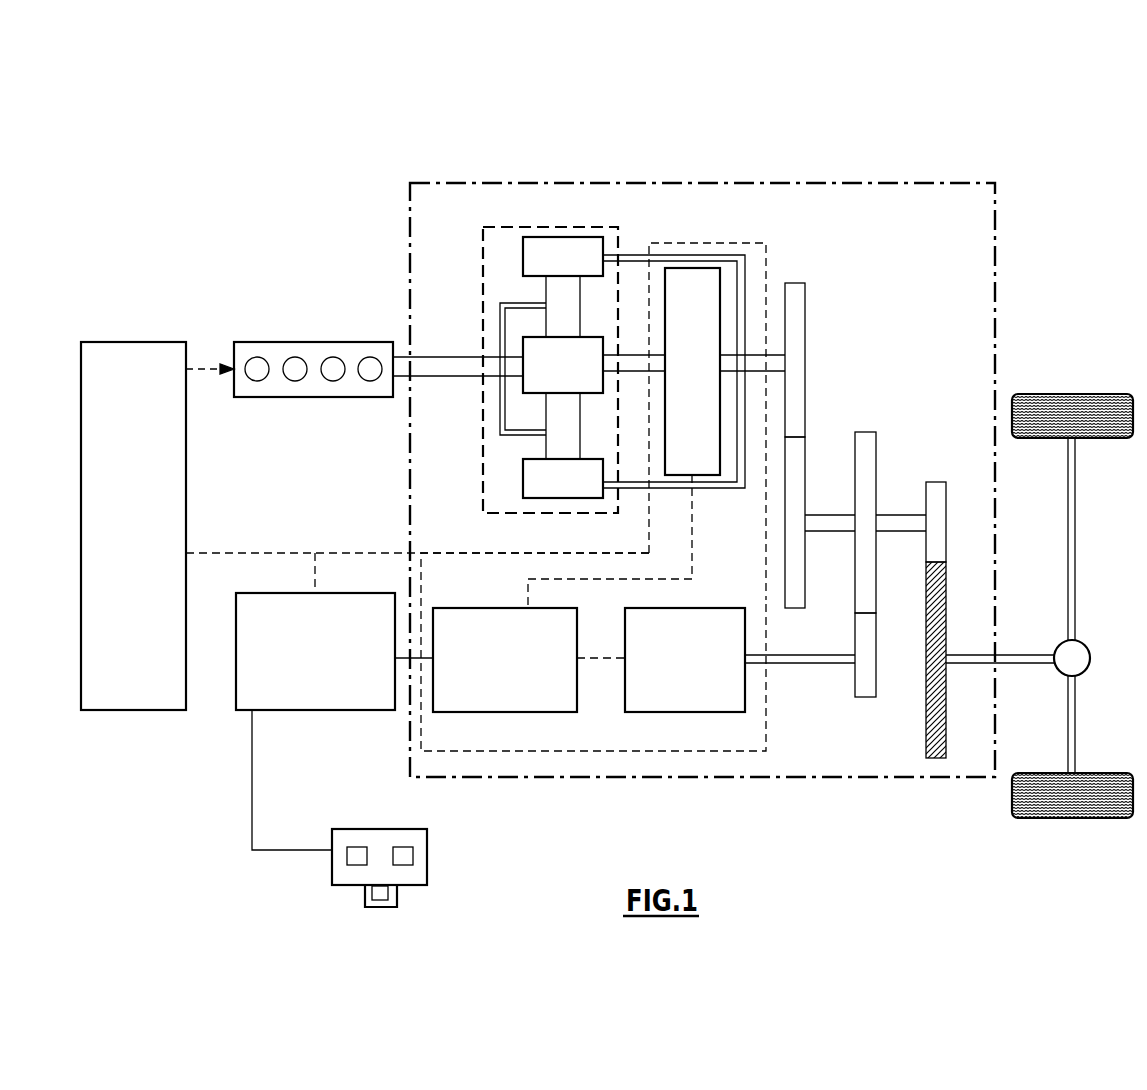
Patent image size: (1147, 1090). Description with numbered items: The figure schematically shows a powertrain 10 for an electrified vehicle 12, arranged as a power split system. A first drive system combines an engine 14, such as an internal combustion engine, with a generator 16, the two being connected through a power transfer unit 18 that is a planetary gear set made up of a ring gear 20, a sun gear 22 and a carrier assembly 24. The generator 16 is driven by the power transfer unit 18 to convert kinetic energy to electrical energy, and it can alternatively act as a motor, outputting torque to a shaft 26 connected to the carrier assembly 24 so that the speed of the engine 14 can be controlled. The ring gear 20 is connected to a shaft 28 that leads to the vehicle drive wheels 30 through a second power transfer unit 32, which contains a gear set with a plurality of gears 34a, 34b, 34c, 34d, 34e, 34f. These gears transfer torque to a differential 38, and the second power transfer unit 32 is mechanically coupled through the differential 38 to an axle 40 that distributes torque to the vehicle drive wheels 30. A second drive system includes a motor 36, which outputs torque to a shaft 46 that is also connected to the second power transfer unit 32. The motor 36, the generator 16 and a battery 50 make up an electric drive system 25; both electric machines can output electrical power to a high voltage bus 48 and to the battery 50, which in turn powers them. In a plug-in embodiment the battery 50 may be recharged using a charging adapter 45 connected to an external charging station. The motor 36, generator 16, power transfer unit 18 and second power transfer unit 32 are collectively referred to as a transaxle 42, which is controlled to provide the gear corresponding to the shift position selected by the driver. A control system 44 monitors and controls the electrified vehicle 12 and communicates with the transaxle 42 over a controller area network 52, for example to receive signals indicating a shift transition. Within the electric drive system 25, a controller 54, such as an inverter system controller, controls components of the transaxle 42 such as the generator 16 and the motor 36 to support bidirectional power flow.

The powertrain 10 is at (341, 248).
The electrified vehicle 12 is at (470, 139).
The engine 14 is at (275, 397).
The generator 16 is at (708, 268).
The power transfer unit 18 is at (483, 312).
The ring gear 20 is at (523, 258).
The sun gear 22 is at (523, 350).
The carrier assembly 24 is at (500, 418).
The electric drive system 25 is at (512, 751).
The shaft 26 is at (640, 367).
The shaft 28 is at (776, 355).
The vehicle drive wheels 30 is at (1083, 377).
The second power transfer unit 32 is at (869, 389).
The gear 34a is at (805, 315).
The gear 34b is at (795, 608).
The gear 34c is at (876, 450).
The gear 34d is at (865, 697).
The gear 34e is at (937, 482).
The gear 34f is at (936, 758).
The motor 36 is at (695, 712).
The differential 38 is at (1080, 652).
The axle 40 is at (1018, 654).
The transaxle 42 is at (878, 777).
The control system 44 is at (127, 342).
The charging adapter 45 is at (430, 857).
The shaft 46 is at (806, 665).
The high voltage bus 48 is at (403, 660).
The battery 50 is at (318, 710).
The controller area network 52 is at (308, 539).
The controller 54 is at (504, 608).